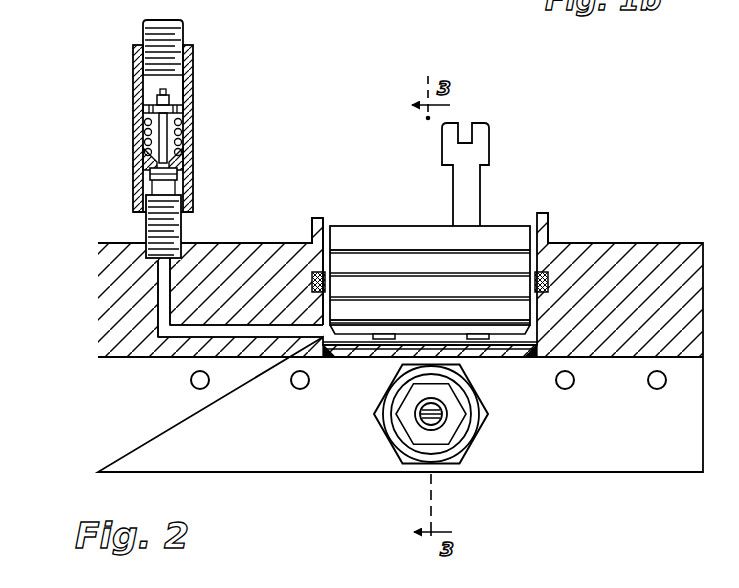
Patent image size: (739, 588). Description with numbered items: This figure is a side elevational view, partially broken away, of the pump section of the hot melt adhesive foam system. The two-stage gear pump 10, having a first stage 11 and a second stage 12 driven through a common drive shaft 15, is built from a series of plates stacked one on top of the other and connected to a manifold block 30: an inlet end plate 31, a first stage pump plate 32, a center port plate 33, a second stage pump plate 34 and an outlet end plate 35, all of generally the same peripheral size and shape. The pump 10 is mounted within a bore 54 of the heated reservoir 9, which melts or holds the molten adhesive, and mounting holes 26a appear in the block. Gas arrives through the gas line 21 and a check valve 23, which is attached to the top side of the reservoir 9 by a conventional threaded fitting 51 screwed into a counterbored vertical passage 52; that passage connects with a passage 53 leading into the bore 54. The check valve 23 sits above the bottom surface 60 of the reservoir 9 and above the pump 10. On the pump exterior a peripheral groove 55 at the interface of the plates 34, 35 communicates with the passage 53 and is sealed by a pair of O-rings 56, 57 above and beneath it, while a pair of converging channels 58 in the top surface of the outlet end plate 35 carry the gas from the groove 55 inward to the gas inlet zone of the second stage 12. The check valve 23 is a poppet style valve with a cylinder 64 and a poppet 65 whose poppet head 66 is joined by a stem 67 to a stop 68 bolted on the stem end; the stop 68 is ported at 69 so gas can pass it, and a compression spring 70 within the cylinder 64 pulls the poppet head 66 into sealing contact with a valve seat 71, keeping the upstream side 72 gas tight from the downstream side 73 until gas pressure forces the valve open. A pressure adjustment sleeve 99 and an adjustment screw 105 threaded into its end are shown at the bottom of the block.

The heated reservoir 9 is at (553, 214).
The two-stage gear pump 10 is at (454, 228).
The first stage 11 is at (412, 263).
The second stage 12 is at (406, 315).
The common drive shaft 15 is at (468, 188).
The gas line 21 is at (150, 31).
The check valve 23 is at (157, 130).
The mounting holes 26a is at (298, 389).
The manifold block 30 is at (150, 427).
The inlet end plate 31 is at (430, 241).
The first stage pump plate 32 is at (430, 265).
The center port plate 33 is at (430, 289).
The second stage pump plate 34 is at (430, 312).
The outlet end plate 35 is at (382, 350).
The threaded fitting 51 is at (183, 238).
The vertical passage 52 is at (162, 288).
The passage 53 is at (251, 332).
The bore 54 is at (334, 224).
The peripheral groove 55 is at (520, 346).
The O-ring 56 is at (584, 243).
The O-ring 57 is at (537, 352).
The channels 58 is at (397, 354).
The bottom surface 60 is at (290, 243).
The cylinder 64 is at (186, 47).
The poppet 65 is at (189, 129).
The poppet head 66 is at (181, 183).
The stem 67 is at (182, 146).
The stop 68 is at (189, 104).
The port 69 is at (200, 76).
The compression spring 70 is at (190, 156).
The valve seat 71 is at (147, 158).
The upstream side 72 is at (150, 82).
The downstream side 73 is at (152, 189).
The pressure adjustment sleeve 99 is at (404, 431).
The adjustment screw 105 is at (432, 424).